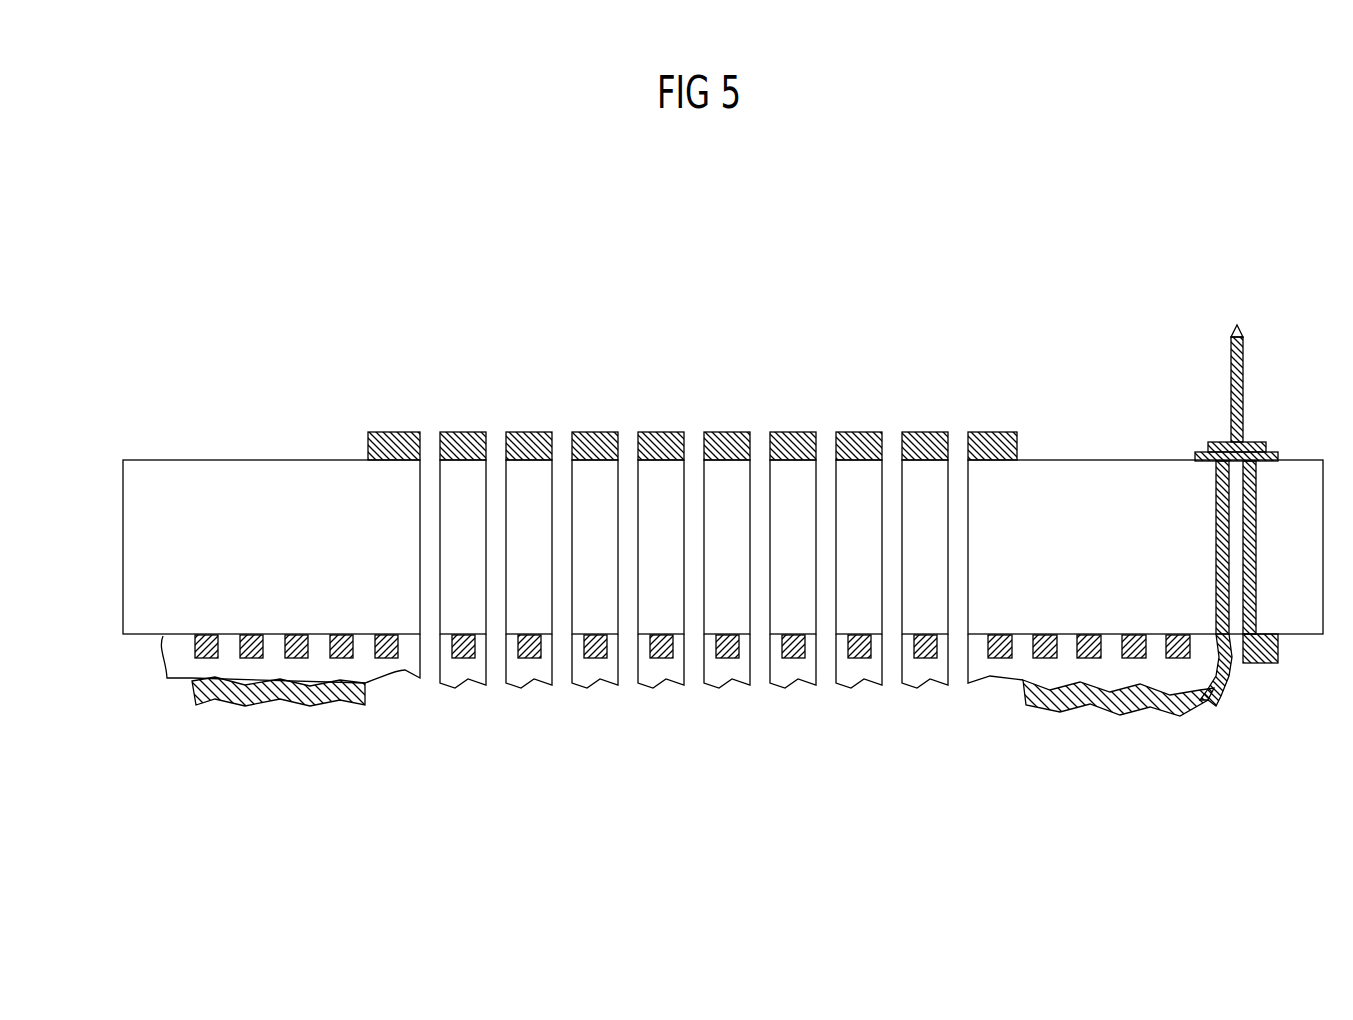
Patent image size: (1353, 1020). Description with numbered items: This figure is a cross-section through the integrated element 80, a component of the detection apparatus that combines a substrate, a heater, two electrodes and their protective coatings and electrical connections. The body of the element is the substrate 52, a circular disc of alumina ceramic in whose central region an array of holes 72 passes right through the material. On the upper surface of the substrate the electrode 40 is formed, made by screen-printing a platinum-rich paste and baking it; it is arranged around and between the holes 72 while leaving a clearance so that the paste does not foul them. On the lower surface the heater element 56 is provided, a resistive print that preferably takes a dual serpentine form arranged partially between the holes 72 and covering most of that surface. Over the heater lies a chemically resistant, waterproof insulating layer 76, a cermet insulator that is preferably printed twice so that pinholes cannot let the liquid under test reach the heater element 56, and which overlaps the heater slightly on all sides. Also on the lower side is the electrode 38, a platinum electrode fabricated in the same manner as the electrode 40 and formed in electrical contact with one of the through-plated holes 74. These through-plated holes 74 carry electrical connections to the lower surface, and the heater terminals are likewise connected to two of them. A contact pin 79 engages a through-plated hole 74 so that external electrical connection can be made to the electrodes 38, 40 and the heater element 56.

The electrode 38 is at (325, 700).
The electrode 40 is at (987, 432).
The substrate 52 is at (133, 547).
The heater element 56 is at (918, 635).
The holes 72 is at (693, 437).
The through-plated holes 74 is at (1235, 627).
The insulating layer 76 is at (404, 672).
The contact pins 79 is at (1240, 377).
The integrated element 80 is at (303, 385).